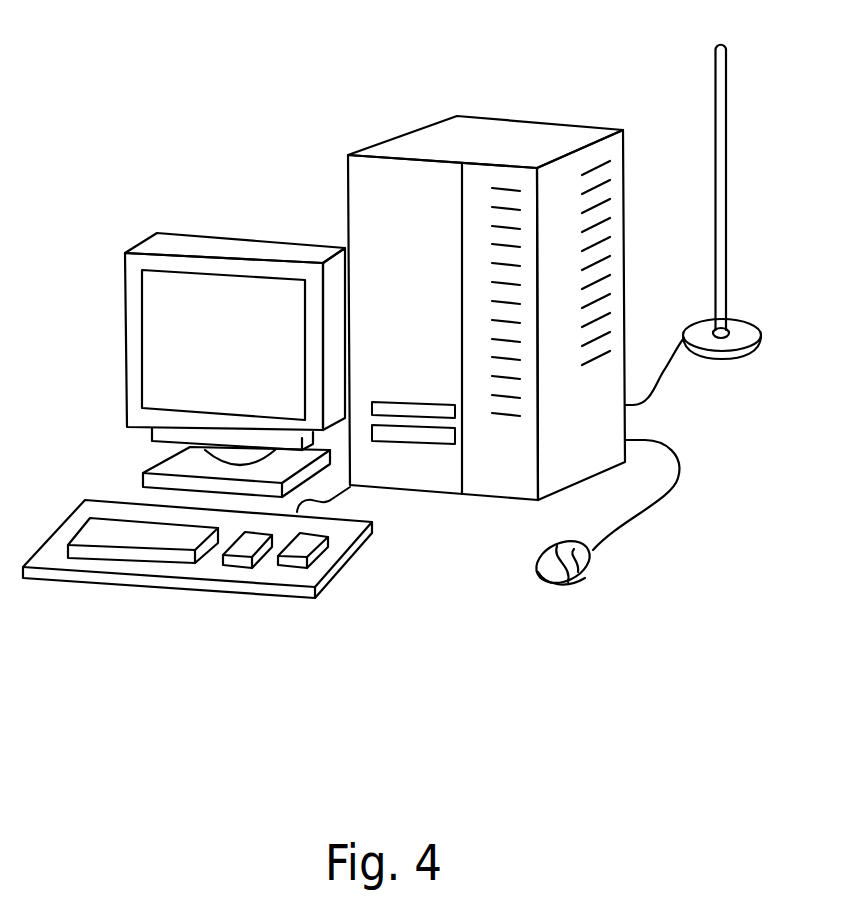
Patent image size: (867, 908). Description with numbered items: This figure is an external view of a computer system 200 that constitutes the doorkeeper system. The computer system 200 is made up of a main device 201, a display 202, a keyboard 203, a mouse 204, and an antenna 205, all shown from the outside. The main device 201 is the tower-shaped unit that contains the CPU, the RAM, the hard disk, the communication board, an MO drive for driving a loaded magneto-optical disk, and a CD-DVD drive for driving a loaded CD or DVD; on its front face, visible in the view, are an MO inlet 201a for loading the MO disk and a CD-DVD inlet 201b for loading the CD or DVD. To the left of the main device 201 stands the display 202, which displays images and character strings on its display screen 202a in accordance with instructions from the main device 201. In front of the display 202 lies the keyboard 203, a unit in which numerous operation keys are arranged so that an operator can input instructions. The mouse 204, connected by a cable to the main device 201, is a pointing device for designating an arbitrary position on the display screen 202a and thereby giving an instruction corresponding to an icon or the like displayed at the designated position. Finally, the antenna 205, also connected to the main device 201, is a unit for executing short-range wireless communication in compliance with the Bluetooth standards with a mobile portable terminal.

The computer system 200 is at (262, 110).
The main device 201 is at (505, 131).
The MO inlet 201a is at (422, 410).
The CD-DVD inlet 201b is at (432, 441).
The display 202 is at (173, 243).
The display screen 202a is at (167, 295).
The keyboard 203 is at (68, 521).
The mouse 204 is at (575, 587).
The antenna 205 is at (727, 135).